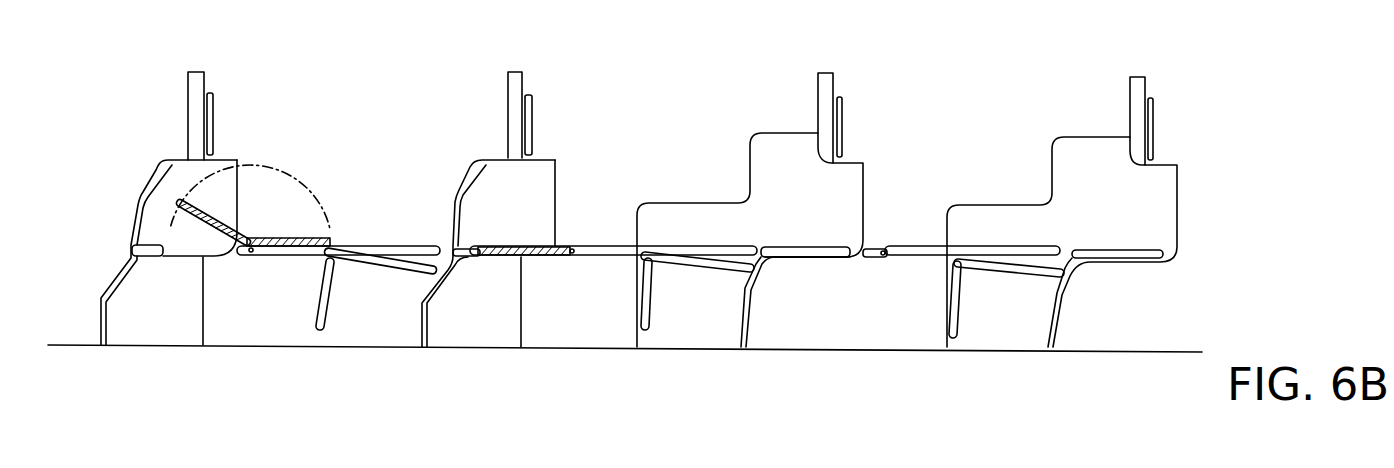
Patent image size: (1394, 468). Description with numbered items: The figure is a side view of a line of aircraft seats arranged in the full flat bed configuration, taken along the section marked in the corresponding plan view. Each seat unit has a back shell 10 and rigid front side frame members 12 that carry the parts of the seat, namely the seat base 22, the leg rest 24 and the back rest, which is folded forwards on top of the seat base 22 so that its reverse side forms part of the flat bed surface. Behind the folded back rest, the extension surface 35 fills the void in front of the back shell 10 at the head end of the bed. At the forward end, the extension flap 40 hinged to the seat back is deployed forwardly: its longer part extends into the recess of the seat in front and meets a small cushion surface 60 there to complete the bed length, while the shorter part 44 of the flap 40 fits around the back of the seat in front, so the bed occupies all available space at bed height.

The back shell 10 is at (826, 75).
The front side frame member 12 is at (705, 202).
The seat base 22 is at (723, 269).
The leg rest 24 is at (962, 299).
The extension surface 35 is at (808, 247).
The extension flap 40 is at (231, 214).
The adjacent portion of extension flap 44 is at (868, 248).
The cushion surface 60 is at (468, 249).